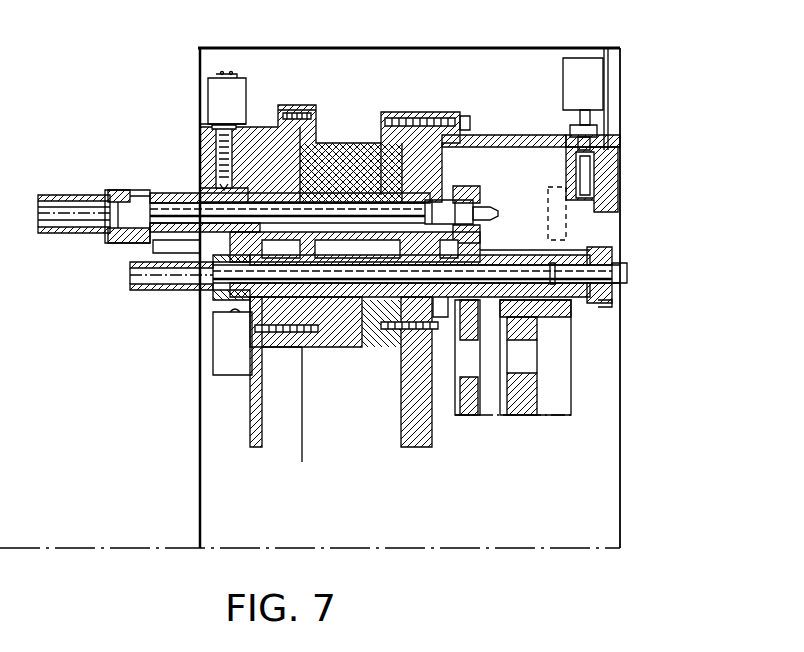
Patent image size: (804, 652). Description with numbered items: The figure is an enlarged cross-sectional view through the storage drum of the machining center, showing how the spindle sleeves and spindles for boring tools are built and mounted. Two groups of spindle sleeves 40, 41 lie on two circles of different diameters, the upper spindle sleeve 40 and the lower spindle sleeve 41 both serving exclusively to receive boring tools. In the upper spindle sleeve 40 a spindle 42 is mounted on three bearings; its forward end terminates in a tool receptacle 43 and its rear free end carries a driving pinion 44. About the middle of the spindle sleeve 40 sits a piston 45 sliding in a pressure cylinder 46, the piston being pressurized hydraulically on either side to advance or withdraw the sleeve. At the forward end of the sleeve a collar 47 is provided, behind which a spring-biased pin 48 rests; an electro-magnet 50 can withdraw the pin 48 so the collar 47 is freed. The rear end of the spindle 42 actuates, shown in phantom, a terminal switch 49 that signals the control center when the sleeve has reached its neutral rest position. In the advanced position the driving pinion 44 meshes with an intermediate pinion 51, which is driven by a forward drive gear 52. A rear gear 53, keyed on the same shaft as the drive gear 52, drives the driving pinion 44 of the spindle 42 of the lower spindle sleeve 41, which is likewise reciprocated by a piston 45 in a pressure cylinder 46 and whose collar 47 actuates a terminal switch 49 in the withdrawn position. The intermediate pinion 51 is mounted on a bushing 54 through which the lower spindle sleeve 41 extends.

The spindle sleeve 40 is at (178, 197).
The spindle sleeve 41 is at (270, 340).
The spindle 42 is at (147, 249).
The tool receptacle 43 is at (78, 231).
The driving pinion 44 is at (468, 186).
The piston 45 is at (315, 195).
The pressure cylinder 46 is at (368, 192).
The collar 47 is at (132, 191).
The spring-biased pin 48 is at (224, 186).
The terminal switch 49 is at (594, 75).
The electro-magnet 50 is at (239, 103).
The intermediate pinion 51 is at (440, 247).
The forward drive gear 52 is at (470, 407).
The rear gear 53 is at (536, 363).
The bushing 54 is at (614, 258).